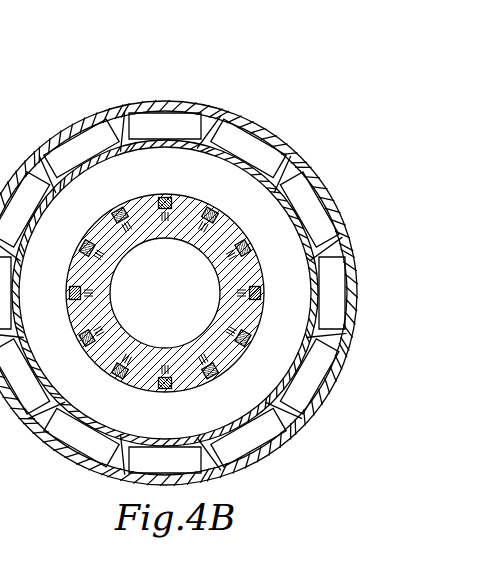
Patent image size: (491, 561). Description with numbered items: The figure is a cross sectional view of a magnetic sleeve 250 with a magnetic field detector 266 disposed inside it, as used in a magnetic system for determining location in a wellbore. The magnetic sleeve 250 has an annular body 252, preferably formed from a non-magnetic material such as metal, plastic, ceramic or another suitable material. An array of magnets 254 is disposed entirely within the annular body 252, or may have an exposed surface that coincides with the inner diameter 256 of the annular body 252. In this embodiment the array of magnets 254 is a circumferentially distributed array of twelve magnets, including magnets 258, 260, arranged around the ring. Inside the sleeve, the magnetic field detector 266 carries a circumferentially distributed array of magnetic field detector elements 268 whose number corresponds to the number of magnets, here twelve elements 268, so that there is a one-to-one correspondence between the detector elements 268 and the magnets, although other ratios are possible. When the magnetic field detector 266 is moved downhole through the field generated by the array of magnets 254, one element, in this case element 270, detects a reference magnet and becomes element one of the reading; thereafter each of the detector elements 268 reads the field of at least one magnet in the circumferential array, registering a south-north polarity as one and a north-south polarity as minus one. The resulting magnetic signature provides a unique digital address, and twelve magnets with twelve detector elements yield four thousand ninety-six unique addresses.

The magnetic sleeve 250 is at (263, 103).
The annular body 252 is at (293, 427).
The array of magnets 254 is at (322, 392).
The inner diameter 256 is at (93, 421).
The magnet 258 is at (181, 104).
The magnet 260 is at (262, 138).
The magnetic field detector 266 is at (232, 225).
The magnetic field detector elements 268 is at (246, 243).
The element 270 is at (169, 198).